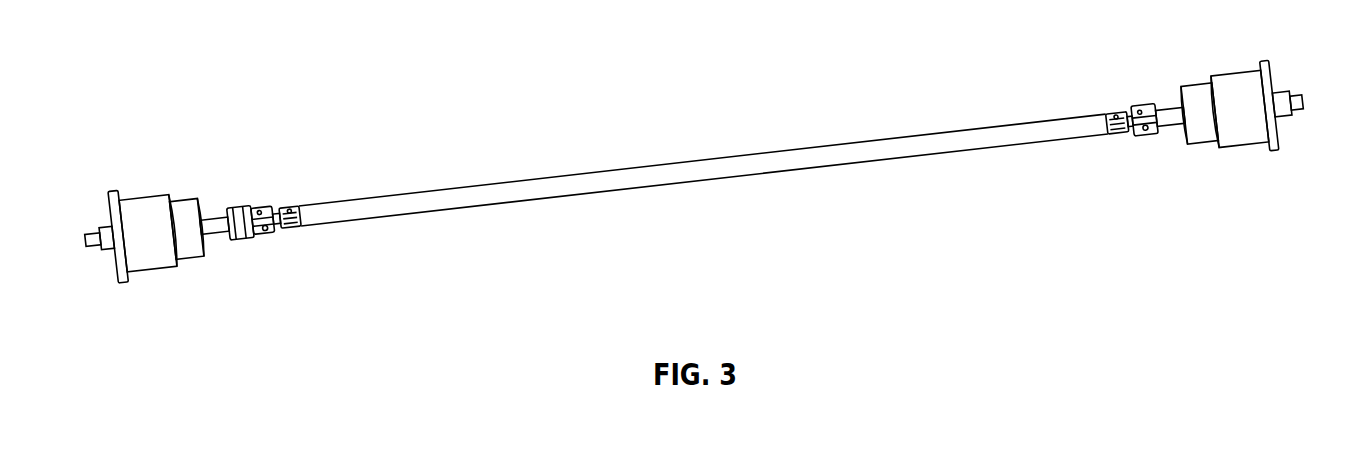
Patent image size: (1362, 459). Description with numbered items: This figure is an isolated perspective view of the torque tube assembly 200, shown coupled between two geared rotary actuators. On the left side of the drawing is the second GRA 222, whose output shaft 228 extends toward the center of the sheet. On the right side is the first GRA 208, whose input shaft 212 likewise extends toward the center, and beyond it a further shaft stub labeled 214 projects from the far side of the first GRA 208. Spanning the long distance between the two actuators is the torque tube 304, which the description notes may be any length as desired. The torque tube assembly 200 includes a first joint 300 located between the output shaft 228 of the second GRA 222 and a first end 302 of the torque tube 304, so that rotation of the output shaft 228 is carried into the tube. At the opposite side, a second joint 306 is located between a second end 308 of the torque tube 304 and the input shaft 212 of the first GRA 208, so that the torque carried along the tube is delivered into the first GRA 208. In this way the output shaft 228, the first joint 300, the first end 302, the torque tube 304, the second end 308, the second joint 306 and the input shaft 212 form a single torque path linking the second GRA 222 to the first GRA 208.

The torque tube assembly 200 is at (677, 98).
The first GRA 208 is at (1235, 92).
The input shaft 212 is at (1185, 102).
The second output shaft 214 is at (1298, 113).
The second GRA 222 is at (148, 204).
The output shaft 228 is at (215, 218).
The first joint 300 is at (250, 259).
The first end 302 is at (292, 232).
The torque tube 304 is at (610, 192).
The second joint 306 is at (1138, 150).
The second end 308 is at (1112, 130).